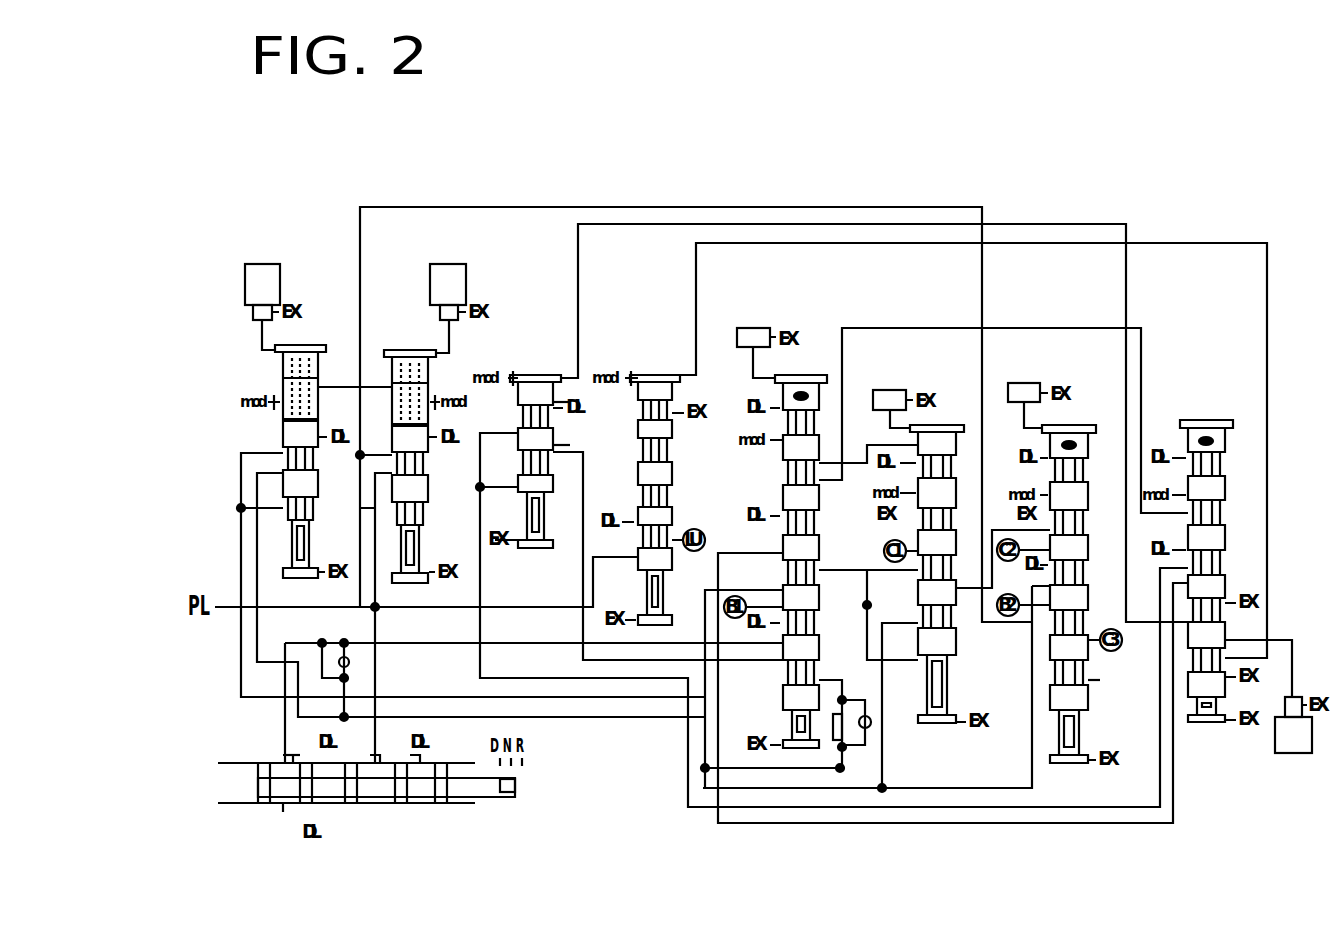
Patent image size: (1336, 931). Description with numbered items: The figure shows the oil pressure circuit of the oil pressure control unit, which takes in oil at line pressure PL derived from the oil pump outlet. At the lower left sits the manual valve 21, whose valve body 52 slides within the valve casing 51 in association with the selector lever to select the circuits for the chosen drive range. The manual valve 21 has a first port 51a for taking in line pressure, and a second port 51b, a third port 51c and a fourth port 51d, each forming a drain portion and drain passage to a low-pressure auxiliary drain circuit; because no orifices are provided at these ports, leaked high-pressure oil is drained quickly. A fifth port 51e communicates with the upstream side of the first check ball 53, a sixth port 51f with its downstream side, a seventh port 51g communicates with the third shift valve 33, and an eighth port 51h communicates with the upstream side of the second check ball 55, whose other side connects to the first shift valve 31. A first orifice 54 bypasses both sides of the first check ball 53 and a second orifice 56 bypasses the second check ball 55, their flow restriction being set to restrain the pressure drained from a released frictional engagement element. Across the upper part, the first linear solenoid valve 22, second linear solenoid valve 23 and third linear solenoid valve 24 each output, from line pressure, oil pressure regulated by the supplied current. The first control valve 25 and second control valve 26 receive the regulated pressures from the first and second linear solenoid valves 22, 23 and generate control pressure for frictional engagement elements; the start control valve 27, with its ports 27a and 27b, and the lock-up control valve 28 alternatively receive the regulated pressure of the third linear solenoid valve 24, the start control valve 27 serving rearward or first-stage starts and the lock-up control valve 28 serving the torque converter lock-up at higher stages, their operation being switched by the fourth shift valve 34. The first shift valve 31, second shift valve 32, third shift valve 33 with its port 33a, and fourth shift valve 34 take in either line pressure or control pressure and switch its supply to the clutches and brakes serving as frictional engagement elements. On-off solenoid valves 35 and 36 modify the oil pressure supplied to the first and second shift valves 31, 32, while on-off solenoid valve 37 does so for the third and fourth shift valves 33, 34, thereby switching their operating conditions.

The manual valve 21 is at (365, 798).
The first linear solenoid valve 22 is at (260, 264).
The second linear solenoid valve 23 is at (448, 264).
The third linear solenoid valve 24 is at (1296, 753).
The first control valve 25 is at (308, 345).
The second control valve 26 is at (408, 350).
The start control valve 27 is at (538, 375).
The port of switching valve 27a is at (570, 402).
The port of switching valve 27b is at (570, 445).
The lock-up (LU) control valve 28 is at (660, 375).
The first shift valve 31 is at (808, 375).
The second shift valve 32 is at (944, 425).
The third shift valve 33 is at (1082, 425).
The port of shift valve 33a is at (1100, 684).
The fourth shift valve 34 is at (1208, 420).
The on-off solenoid valve 35 is at (750, 328).
The on-off solenoid valve 36 is at (892, 390).
The on-off solenoid valve 37 is at (1024, 383).
The valve casing 51 is at (236, 805).
The first port 51a is at (360, 806).
The second port 51b is at (428, 801).
The third port 51c is at (312, 753).
The fourth port 51d is at (318, 809).
The fifth port 51e is at (378, 801).
The sixth port 51f is at (282, 759).
The seventh port 51g is at (292, 812).
The eighth port 51h is at (406, 801).
The valve body 52 is at (496, 799).
The first check ball 53 is at (350, 662).
The first orifice 54 is at (322, 651).
The second check ball 55 is at (871, 722).
The second orifice 56 is at (844, 750).